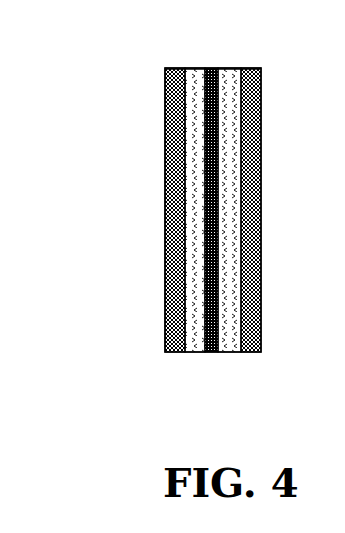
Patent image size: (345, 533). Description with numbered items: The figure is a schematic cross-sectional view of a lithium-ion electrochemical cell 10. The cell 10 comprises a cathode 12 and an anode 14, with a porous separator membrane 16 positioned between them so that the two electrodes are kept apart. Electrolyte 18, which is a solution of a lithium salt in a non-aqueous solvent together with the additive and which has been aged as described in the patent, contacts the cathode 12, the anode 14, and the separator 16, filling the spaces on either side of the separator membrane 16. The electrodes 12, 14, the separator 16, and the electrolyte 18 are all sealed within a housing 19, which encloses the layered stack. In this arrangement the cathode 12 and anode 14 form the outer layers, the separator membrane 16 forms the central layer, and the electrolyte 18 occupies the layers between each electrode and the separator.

The lithium-ion electrochemical cell 10 is at (116, 90).
The cathode 12 is at (165, 130).
The anode 14 is at (261, 112).
The porous separator membrane 16 is at (218, 352).
The electrolyte 18 is at (186, 198).
The housing 19 is at (232, 68).